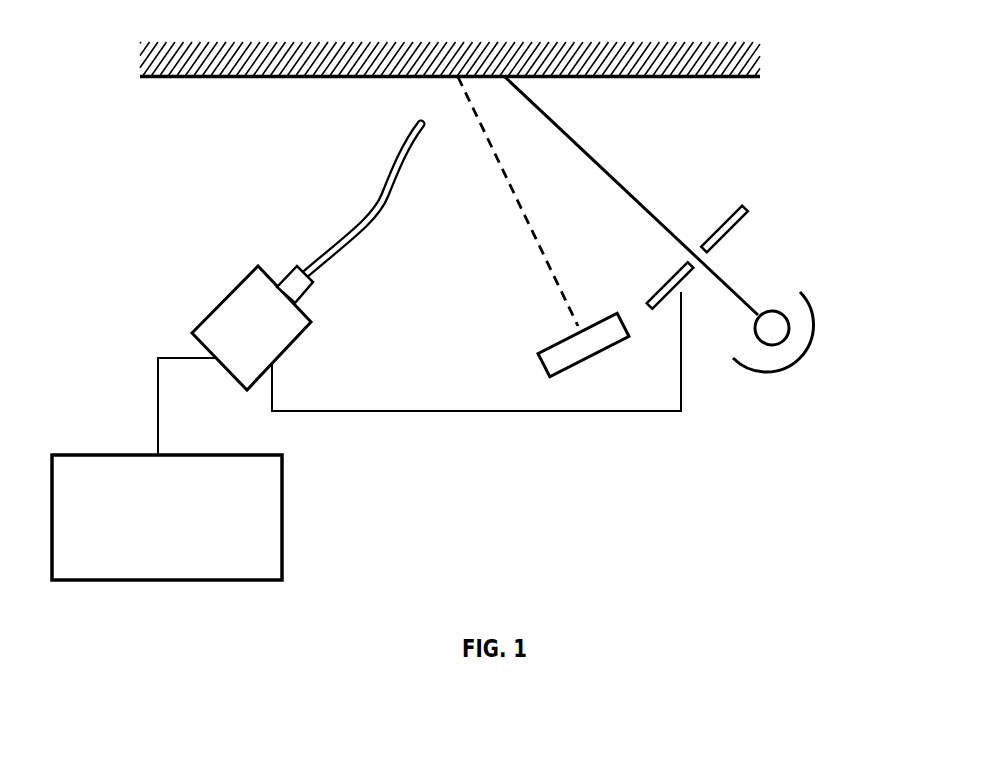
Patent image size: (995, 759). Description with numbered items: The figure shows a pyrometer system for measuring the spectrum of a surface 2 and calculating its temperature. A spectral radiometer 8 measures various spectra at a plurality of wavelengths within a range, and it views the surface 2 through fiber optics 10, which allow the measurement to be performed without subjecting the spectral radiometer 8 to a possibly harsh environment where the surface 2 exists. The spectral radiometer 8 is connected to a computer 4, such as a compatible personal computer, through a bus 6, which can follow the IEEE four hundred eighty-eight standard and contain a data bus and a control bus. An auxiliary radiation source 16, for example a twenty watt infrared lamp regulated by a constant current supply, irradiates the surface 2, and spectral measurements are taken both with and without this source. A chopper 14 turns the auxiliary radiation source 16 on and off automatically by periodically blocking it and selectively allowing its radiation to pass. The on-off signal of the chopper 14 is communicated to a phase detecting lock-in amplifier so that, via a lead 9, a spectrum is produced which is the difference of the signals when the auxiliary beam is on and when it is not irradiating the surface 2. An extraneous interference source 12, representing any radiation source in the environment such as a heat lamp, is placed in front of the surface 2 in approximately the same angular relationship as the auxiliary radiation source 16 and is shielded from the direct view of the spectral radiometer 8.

The surface 2 is at (612, 78).
The computer 4 is at (284, 550).
The bus 6 is at (157, 410).
The spectral radiometer 8 is at (254, 338).
The lead 9 is at (363, 411).
The fiber optics 10 is at (372, 207).
The extraneous interference source 12 is at (543, 370).
The chopper 14 is at (727, 233).
The auxiliary radiation source 16 is at (760, 367).